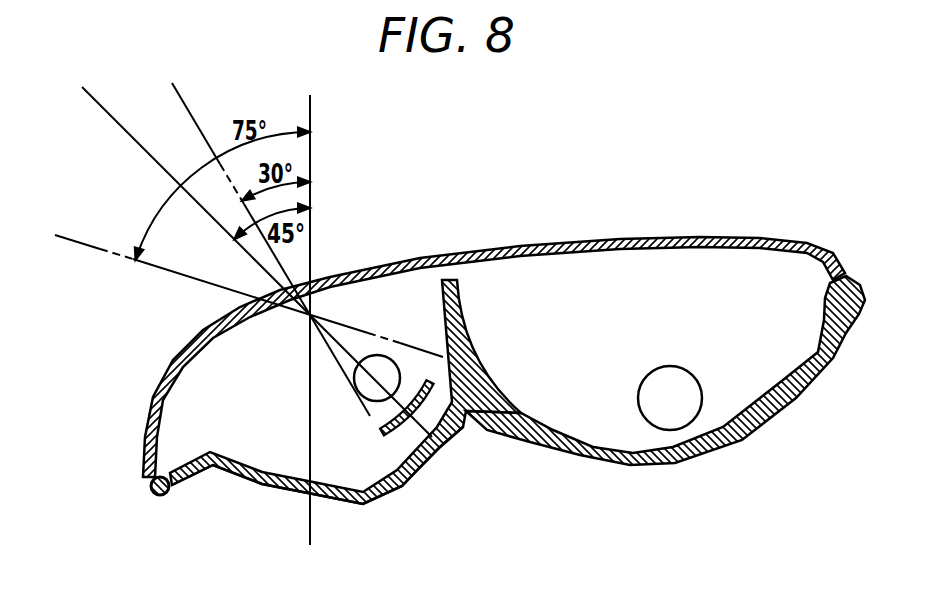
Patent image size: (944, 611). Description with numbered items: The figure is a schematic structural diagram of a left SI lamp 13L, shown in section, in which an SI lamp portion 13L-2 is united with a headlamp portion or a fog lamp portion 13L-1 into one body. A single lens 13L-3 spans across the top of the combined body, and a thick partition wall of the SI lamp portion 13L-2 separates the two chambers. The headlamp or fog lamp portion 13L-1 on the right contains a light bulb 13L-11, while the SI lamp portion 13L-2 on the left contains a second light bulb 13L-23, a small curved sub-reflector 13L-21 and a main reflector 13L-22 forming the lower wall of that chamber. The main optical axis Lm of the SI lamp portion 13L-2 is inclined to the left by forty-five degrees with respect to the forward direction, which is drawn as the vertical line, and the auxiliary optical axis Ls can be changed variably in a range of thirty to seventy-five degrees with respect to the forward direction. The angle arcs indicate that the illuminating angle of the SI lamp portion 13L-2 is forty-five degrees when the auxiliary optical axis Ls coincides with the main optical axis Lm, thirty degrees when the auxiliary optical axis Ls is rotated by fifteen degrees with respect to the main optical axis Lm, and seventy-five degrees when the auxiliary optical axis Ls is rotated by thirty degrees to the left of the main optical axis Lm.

The left SI lamp 13L is at (594, 213).
The headlamp portion or fog lamp portion 13L-1 is at (610, 427).
The SI lamp portion 13L-2 is at (363, 467).
The lens 13L-3 is at (712, 238).
The light bulb 13L-11 is at (693, 397).
The sub-reflector 13L-21 is at (398, 420).
The main reflector 13L-22 is at (400, 468).
The light bulb 13L-23 is at (352, 387).
The auxiliary optical axis Ls is at (196, 124).
The main optical axis Lm is at (121, 130).